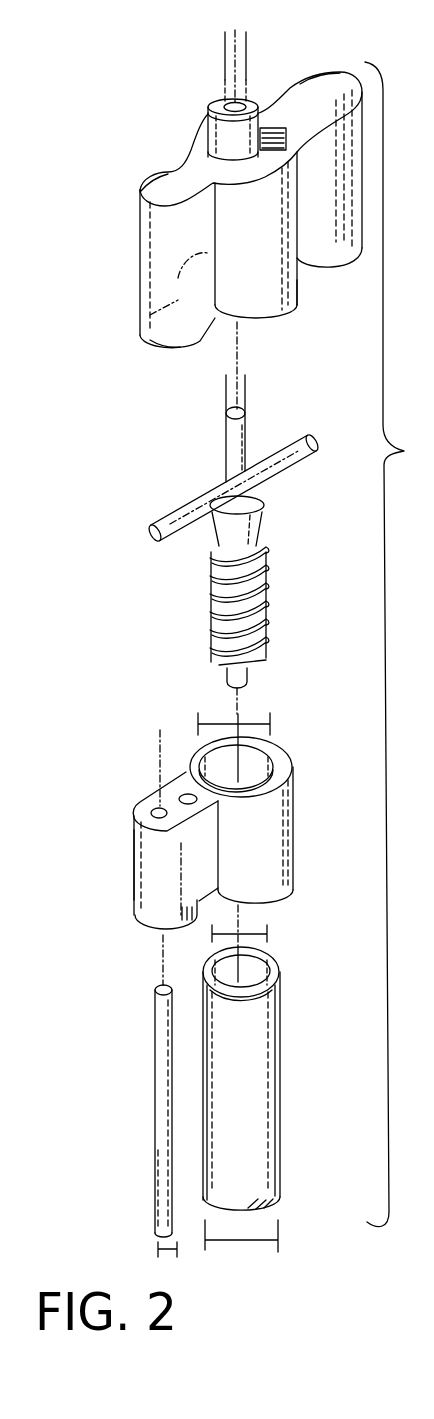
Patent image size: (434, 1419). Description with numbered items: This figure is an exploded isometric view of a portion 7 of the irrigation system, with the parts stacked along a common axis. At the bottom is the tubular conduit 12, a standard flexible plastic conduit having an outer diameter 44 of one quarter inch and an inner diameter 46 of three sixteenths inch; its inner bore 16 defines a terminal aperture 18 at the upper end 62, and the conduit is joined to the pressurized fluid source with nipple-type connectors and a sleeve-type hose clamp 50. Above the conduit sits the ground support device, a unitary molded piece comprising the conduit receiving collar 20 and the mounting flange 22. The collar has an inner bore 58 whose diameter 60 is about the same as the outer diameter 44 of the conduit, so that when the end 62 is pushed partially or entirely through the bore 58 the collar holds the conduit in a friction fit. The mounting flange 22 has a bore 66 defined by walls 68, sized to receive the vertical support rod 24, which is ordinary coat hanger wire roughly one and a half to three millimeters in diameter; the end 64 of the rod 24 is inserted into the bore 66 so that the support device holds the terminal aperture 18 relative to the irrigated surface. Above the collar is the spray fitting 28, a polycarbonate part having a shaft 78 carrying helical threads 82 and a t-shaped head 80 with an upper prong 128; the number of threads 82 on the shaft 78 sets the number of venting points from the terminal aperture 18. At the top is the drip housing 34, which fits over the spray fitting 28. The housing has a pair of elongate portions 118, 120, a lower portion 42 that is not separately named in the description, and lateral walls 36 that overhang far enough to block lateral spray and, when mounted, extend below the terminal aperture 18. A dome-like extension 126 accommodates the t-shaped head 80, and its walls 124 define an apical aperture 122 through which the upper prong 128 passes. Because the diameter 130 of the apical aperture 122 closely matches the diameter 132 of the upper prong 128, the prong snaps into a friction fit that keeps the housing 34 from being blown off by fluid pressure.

The assembly 7 is at (399, 644).
The tubular conduit 12 is at (273, 1083).
The inner bore 16 is at (258, 973).
The terminal aperture 18 is at (262, 974).
The conduit receiving collar 20 is at (296, 824).
The mounting flange 22 is at (190, 863).
The vertical support rod 24 is at (155, 1090).
The spray fitting 28 is at (263, 527).
The drip housing 34 is at (136, 243).
The lateral walls 36 is at (298, 291).
The lobe 42 is at (172, 322).
The outer diameter 44 is at (271, 1242).
The inner diameter 46 is at (264, 932).
The sleeve-type hose clamp 50 is at (158, 1251).
The inner bore 58 is at (266, 765).
The diameter 60 is at (263, 717).
The end 62 is at (255, 994).
The end 64 is at (155, 991).
The bore 66 is at (158, 806).
The walls 68 is at (140, 820).
The shaft 78 is at (262, 585).
The t-shaped head 80 is at (306, 436).
The helical threads 82 is at (212, 582).
The elongate portion 118 is at (170, 175).
The elongate portion 120 is at (317, 88).
The apical aperture 122 is at (241, 103).
The walls 124 is at (216, 103).
The dome-like extension 126 is at (265, 115).
The upper prong 128 is at (224, 440).
The diameter 130 is at (244, 38).
The diameter 132 is at (241, 377).